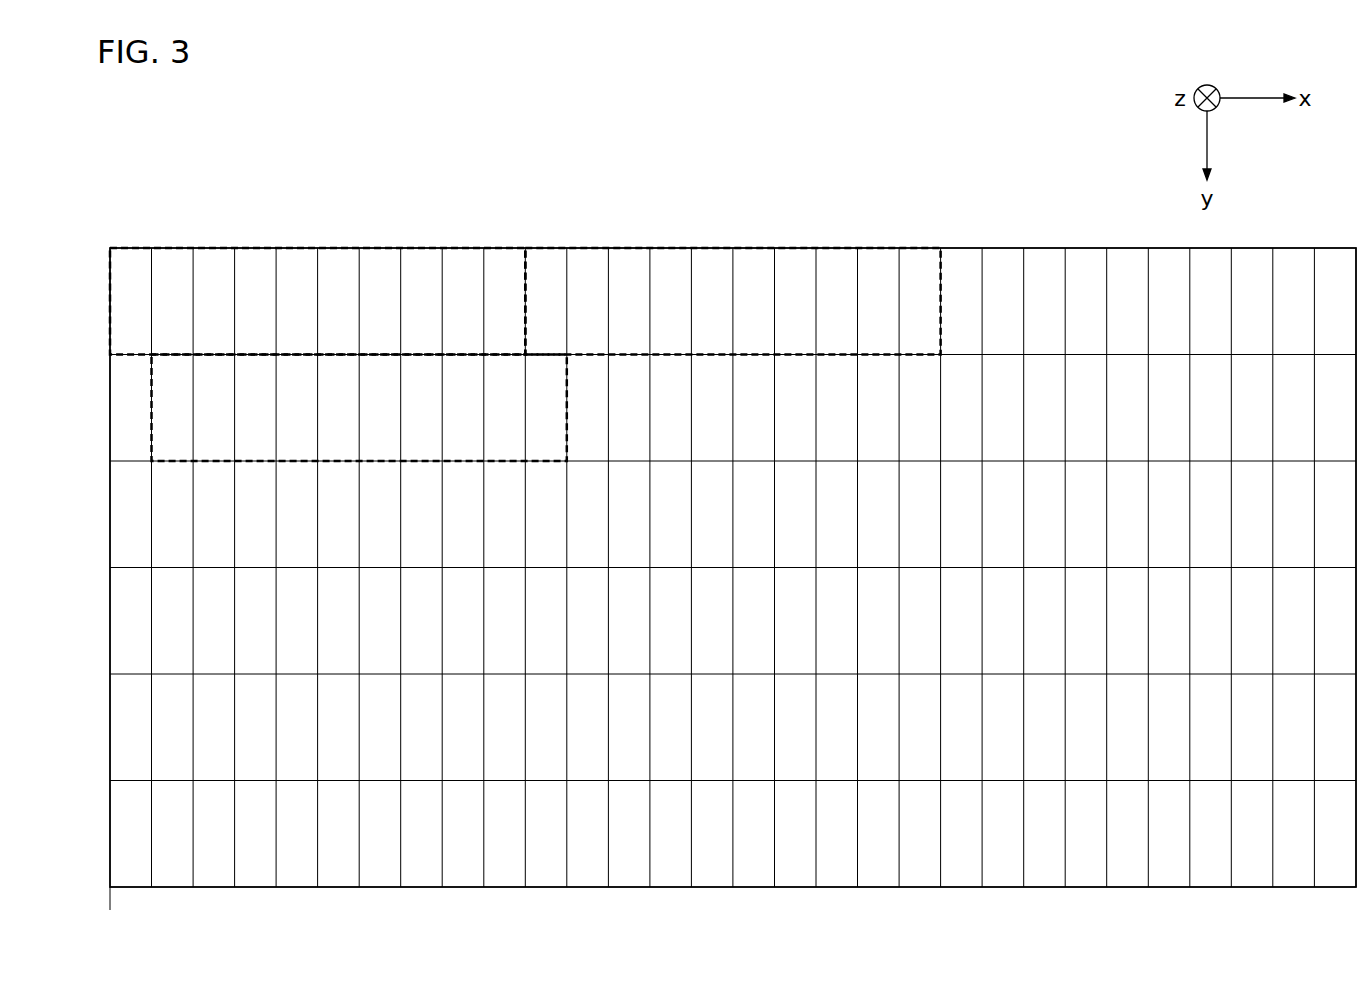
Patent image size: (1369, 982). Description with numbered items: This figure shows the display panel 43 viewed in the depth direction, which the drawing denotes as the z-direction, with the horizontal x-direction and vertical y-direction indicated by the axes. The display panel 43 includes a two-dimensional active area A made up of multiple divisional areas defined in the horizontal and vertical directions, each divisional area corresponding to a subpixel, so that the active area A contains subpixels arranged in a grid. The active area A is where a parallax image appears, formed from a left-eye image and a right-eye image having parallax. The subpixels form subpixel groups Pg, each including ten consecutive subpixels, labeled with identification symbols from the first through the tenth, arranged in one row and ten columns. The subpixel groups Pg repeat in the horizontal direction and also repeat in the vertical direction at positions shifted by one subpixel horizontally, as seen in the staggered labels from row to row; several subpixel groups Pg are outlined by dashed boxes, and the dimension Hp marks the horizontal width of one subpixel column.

The display panel 43 is at (573, 181).
The subpixel group Pg is at (294, 248).
The active area A is at (1329, 248).
The pixel pitch (pixel width) Hp is at (148, 902).